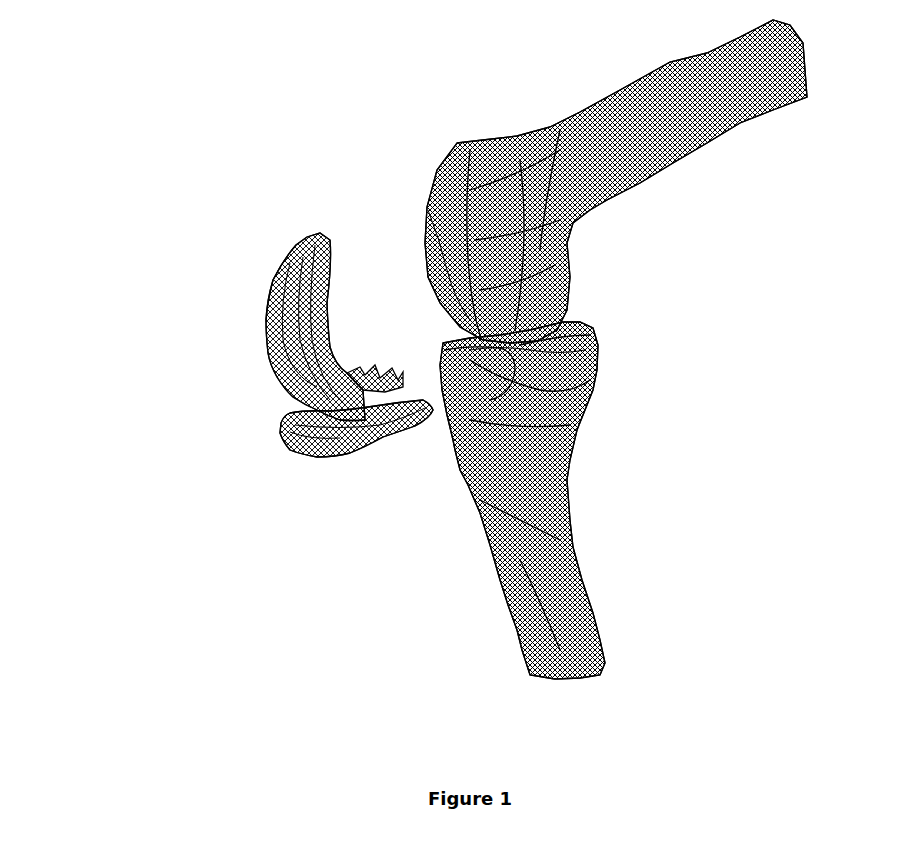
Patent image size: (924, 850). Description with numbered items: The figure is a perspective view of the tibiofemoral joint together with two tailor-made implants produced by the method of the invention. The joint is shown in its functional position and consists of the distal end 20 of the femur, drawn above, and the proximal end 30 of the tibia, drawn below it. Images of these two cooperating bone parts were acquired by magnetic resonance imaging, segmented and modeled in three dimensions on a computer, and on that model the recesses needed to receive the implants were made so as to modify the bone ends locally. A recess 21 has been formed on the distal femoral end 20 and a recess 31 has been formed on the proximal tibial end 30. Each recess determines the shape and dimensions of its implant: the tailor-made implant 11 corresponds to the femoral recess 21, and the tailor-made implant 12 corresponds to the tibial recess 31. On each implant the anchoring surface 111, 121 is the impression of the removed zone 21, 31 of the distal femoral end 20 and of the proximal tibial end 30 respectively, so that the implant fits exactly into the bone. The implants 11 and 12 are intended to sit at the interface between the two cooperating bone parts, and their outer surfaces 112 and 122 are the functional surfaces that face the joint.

The distal end of the femur 20 is at (493, 98).
The recess 21 is at (447, 197).
The proximal end of the tibia 30 is at (600, 380).
The recess 31 is at (488, 368).
The tailor-made implant 11 is at (233, 327).
The anchoring surface 111 is at (330, 323).
The outer surface 112 is at (273, 280).
The tailor-made implant 12 is at (250, 472).
The anchoring surface 121 is at (368, 442).
The outer surface 122 is at (287, 440).